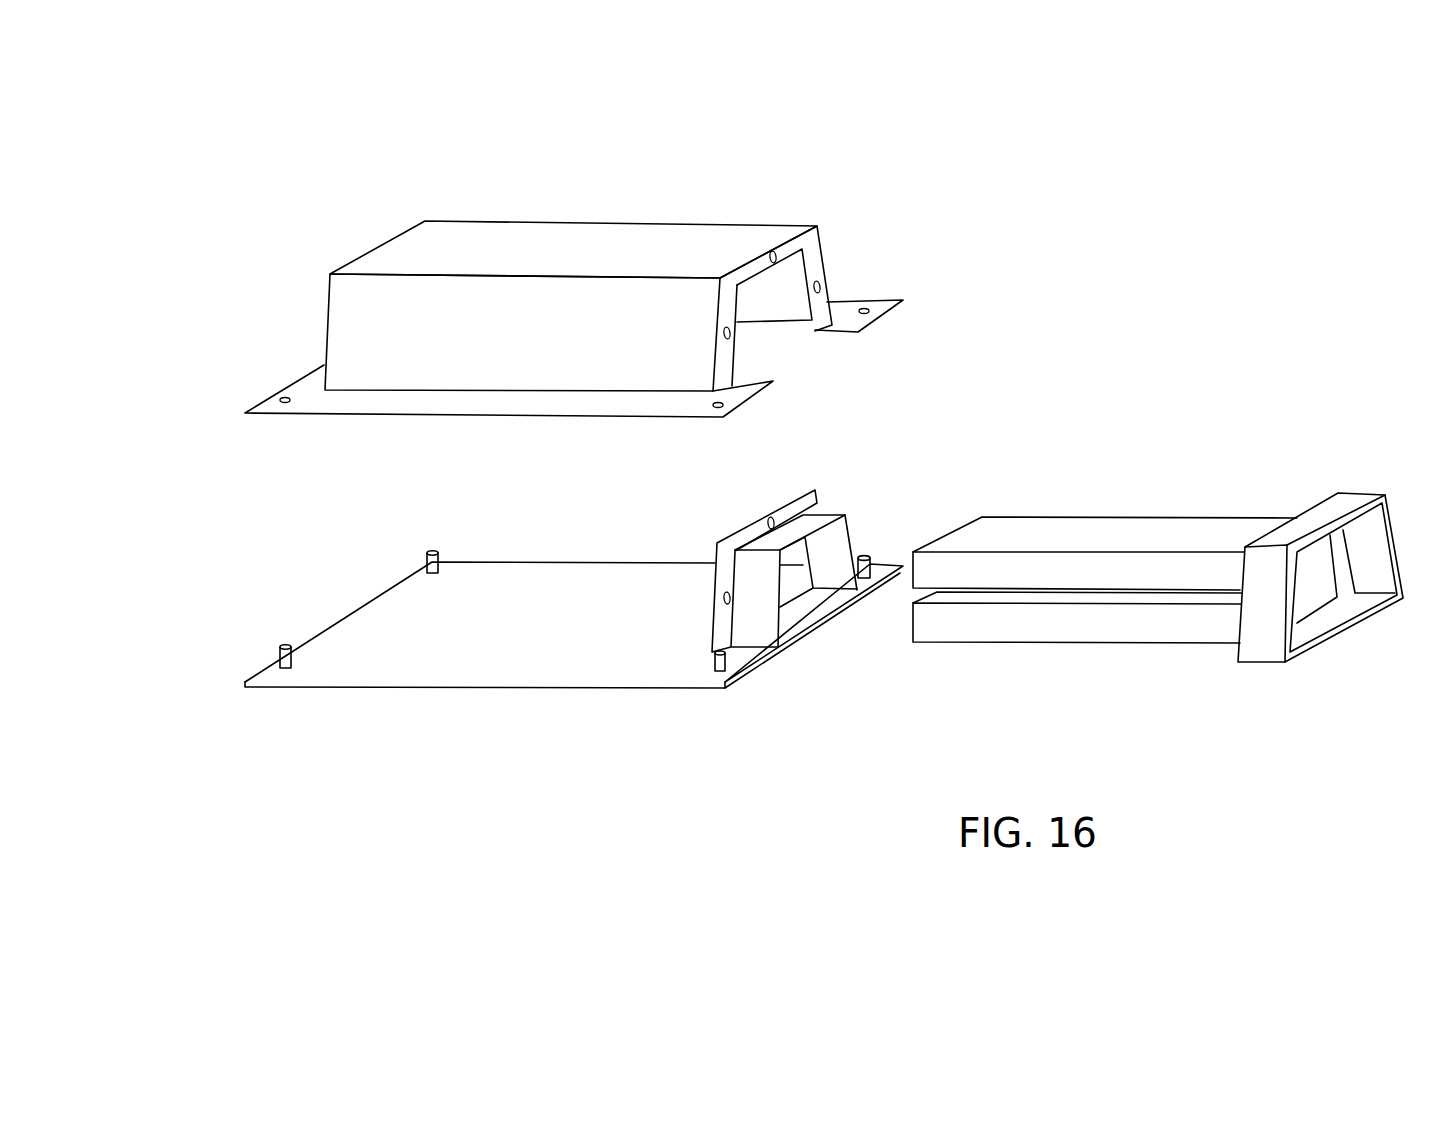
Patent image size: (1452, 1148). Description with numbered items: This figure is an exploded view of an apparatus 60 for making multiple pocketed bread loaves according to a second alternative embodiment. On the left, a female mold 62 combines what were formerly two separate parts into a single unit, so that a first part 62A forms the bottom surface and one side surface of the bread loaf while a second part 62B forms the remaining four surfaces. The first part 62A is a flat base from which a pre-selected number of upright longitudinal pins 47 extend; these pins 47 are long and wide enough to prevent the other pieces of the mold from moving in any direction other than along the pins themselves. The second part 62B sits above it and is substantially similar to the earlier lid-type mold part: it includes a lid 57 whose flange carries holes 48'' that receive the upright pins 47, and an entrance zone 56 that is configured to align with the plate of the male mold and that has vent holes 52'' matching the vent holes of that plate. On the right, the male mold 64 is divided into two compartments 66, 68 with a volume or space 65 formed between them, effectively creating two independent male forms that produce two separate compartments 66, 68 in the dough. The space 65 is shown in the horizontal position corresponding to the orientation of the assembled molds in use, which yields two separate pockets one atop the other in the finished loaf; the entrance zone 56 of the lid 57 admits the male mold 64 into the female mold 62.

The apparatus for making multiple pocketed loaves 60 is at (1088, 288).
The female mold 62 is at (245, 243).
The first part 62A is at (517, 702).
The second part 62B is at (502, 427).
The lid section 57 is at (620, 238).
The holes 48'' is at (509, 423).
The vent holes 52'' is at (811, 306).
The longitudinal pins 47 is at (737, 658).
The male mold 64 is at (1140, 492).
The compartment 66 is at (1058, 570).
The space 65 is at (980, 602).
The compartment 68 is at (1060, 627).
The entrance zone 56 is at (1263, 638).